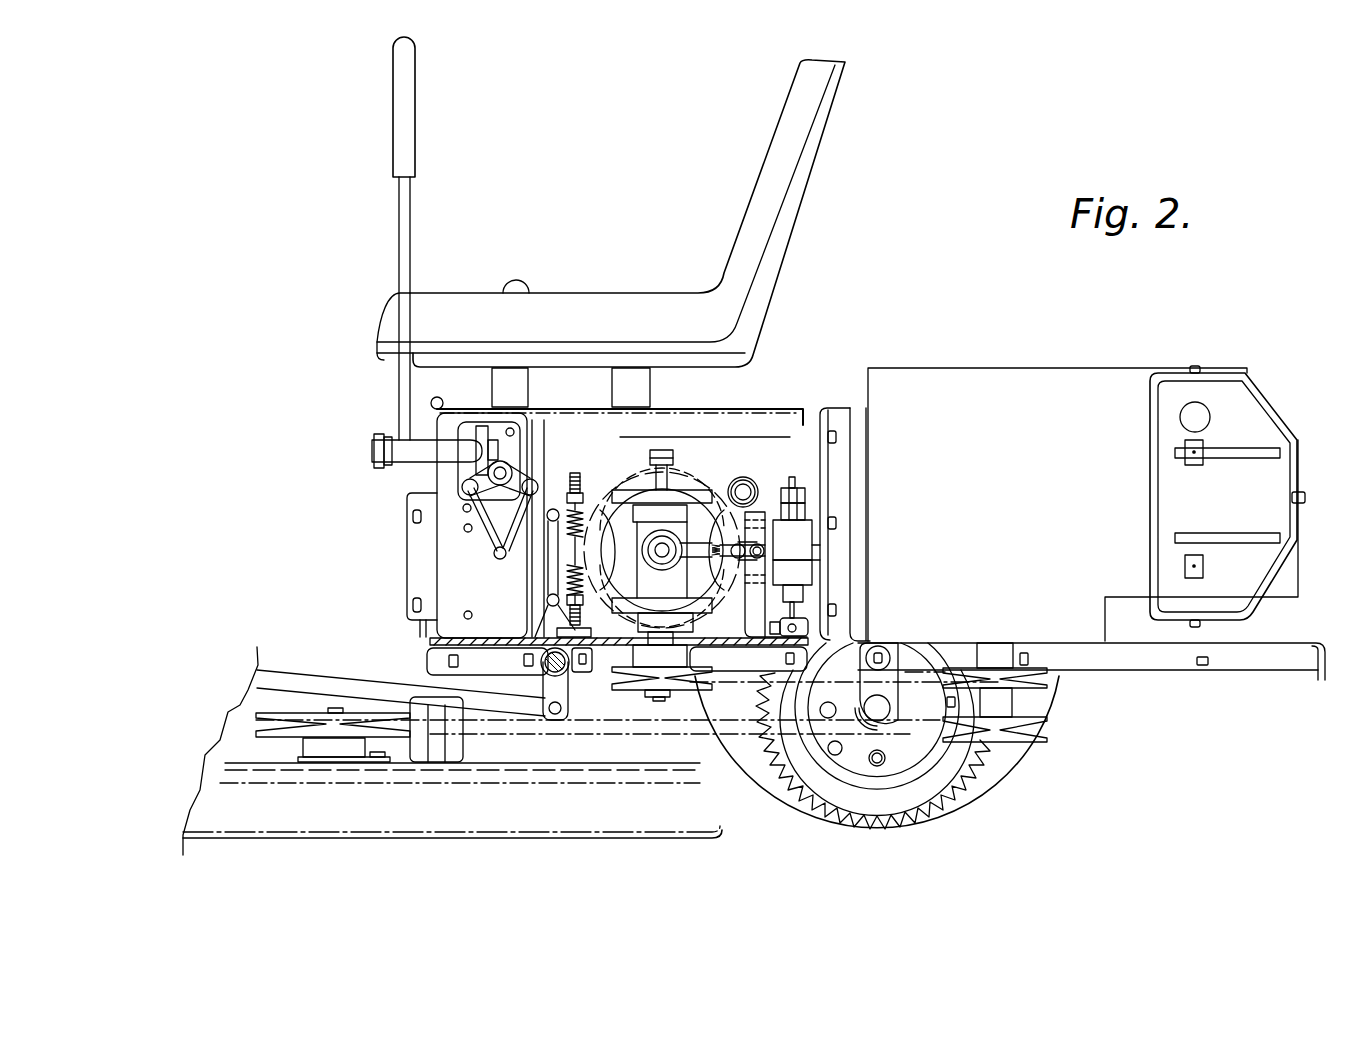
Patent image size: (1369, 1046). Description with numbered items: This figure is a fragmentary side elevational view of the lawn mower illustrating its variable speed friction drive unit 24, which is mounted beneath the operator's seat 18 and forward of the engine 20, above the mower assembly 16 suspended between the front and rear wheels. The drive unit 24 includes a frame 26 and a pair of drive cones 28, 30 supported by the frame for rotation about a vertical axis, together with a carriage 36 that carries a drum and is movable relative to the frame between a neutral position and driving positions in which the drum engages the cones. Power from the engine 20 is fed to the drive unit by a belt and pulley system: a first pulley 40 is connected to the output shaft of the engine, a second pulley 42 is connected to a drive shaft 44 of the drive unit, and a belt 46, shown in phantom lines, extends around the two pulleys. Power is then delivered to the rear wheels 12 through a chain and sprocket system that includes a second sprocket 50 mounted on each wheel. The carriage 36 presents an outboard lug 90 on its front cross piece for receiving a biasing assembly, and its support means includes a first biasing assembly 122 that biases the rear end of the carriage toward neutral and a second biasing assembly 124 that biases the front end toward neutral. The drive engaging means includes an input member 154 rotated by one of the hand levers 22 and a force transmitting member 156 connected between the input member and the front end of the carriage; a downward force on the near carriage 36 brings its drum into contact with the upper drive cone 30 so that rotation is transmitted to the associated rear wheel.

The rear wheels 12 is at (1030, 775).
The mower assembly 16 is at (514, 843).
The seat 18 is at (684, 296).
The engine 20 is at (1113, 394).
The hand levers 22 is at (405, 137).
The variable speed friction drive unit 24 is at (708, 458).
The frame 26 is at (761, 506).
The drive cone 28 is at (648, 487).
The upper drive cone 30 is at (627, 623).
The carriage 36 is at (518, 552).
The first pulley 40 is at (1032, 672).
The second pulley 42 is at (700, 686).
The drive shaft 44 is at (660, 695).
The belt 46 is at (908, 668).
The second sprocket 50 is at (930, 795).
The outboard lug 90 is at (720, 553).
The first biasing assembly 122 is at (804, 480).
The second biasing assembly 124 is at (579, 474).
The input member 154 is at (490, 477).
The force transmitting member 156 is at (481, 540).